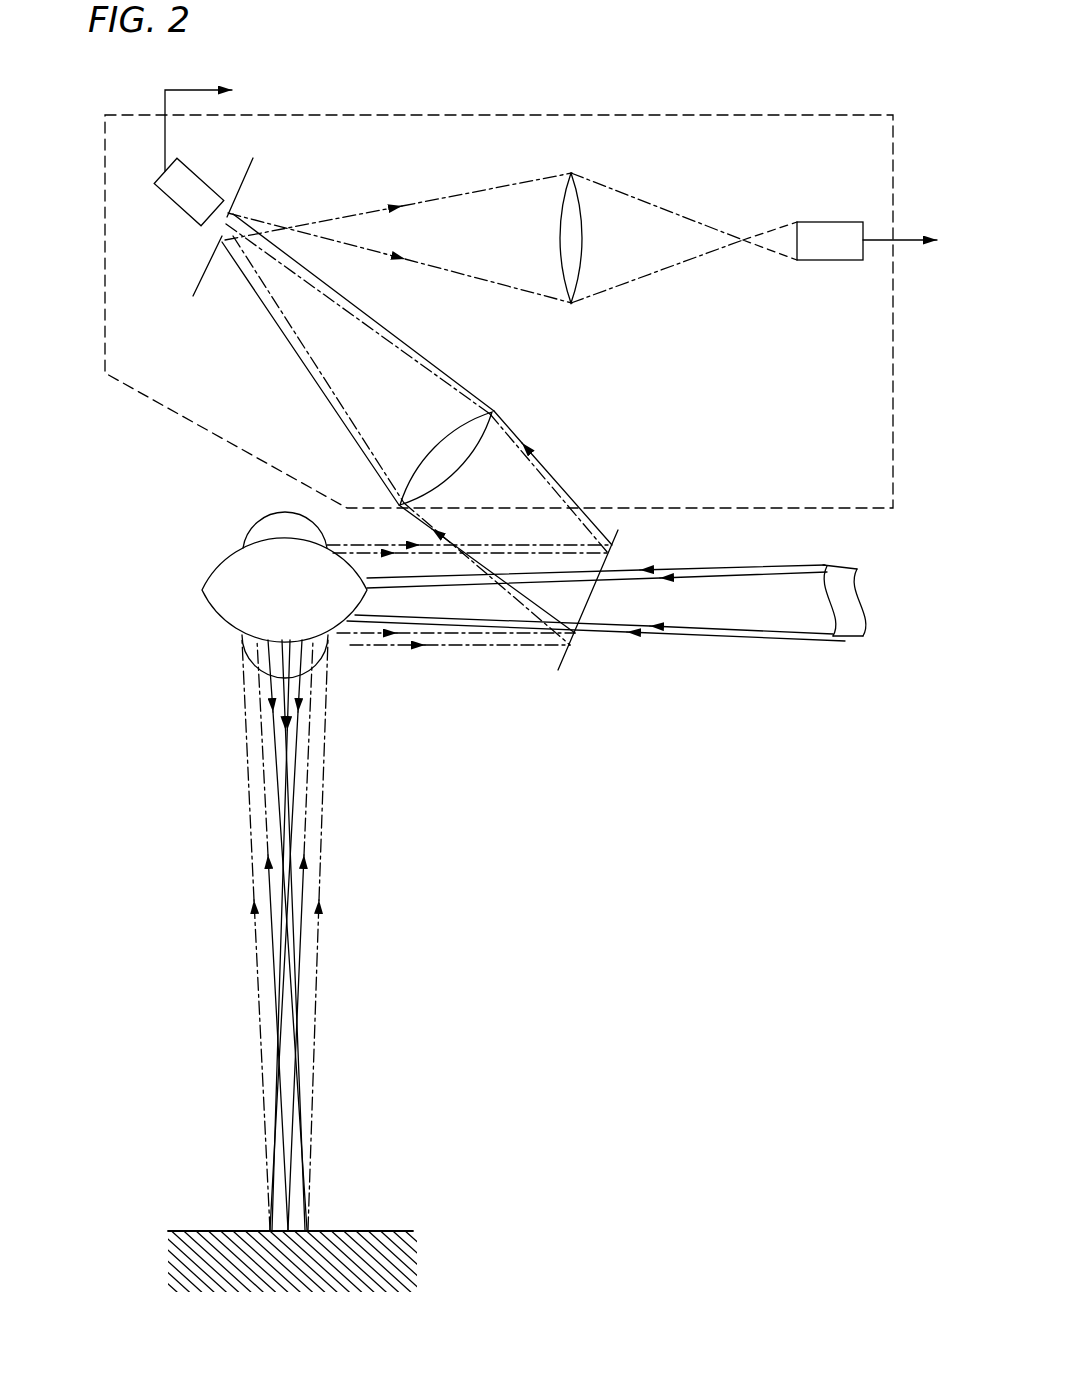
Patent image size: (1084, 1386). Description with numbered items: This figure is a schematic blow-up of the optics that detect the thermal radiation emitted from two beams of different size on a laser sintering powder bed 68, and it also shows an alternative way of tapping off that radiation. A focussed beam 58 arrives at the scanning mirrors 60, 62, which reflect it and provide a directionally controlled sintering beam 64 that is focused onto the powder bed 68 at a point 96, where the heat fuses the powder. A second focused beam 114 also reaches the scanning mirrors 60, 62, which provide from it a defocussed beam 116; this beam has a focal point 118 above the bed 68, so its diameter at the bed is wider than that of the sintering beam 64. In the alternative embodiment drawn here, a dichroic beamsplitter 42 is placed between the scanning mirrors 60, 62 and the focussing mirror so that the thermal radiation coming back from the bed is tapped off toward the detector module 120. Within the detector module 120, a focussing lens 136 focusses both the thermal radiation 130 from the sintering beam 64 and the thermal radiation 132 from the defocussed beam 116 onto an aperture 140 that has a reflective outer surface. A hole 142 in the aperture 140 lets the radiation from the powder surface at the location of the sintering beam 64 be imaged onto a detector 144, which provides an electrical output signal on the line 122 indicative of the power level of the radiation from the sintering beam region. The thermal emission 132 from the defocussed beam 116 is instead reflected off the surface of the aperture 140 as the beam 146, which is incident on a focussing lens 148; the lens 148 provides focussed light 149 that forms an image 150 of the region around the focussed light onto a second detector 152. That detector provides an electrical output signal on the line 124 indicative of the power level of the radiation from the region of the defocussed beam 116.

The line 122 is at (165, 96).
The detector 144 is at (190, 168).
The aperture 140 is at (243, 188).
The hole 142 is at (222, 229).
The beam 146 is at (457, 197).
The focussed light 149 is at (630, 202).
The focussing lens 148 is at (572, 303).
The image 150 is at (793, 252).
The second detector 152 is at (836, 222).
The line 124 is at (910, 240).
The detector module 120 is at (903, 350).
The thermal radiation 130 is at (290, 325).
The thermal radiation 132 is at (273, 312).
The focussing lens 136 is at (492, 412).
The scanning mirror 62 is at (257, 518).
The scanning mirror 60 is at (202, 590).
The focussed beam 58 is at (710, 565).
The focused beam 114 is at (845, 638).
The dichroic beamsplitter 42 is at (558, 670).
The sintering beam 64 is at (293, 805).
The focal point 118 is at (287, 823).
The defocussed beam 116 is at (300, 1125).
The point 96 is at (290, 1228).
The sintering powder bed 68 is at (357, 1230).